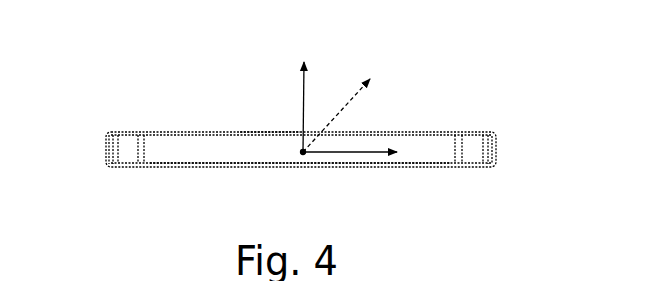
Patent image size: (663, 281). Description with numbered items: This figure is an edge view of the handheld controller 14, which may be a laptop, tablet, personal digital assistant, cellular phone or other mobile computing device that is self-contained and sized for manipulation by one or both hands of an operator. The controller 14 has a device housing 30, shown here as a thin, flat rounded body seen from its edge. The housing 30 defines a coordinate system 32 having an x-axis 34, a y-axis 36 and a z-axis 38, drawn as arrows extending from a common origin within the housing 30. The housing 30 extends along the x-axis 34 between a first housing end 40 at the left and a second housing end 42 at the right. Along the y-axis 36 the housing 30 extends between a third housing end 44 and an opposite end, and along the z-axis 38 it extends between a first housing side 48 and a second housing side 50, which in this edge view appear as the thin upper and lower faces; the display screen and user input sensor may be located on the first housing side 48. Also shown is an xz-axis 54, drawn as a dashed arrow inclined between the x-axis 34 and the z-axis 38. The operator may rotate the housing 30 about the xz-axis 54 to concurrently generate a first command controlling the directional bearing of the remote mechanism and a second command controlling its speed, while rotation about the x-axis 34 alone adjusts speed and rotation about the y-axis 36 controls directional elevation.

The controller 14 is at (470, 108).
The device housing 30 is at (452, 168).
The coordinate system 32 is at (273, 108).
The x-axis 34 is at (340, 153).
The y-axis 36 is at (303, 155).
The z-axis 38 is at (300, 80).
The first housing end 40 is at (106, 152).
The second housing end 42 is at (497, 152).
The third housing end 44 is at (207, 160).
The first housing side 48 is at (158, 132).
The second housing side 50 is at (156, 168).
The xz-axis 54 is at (350, 98).